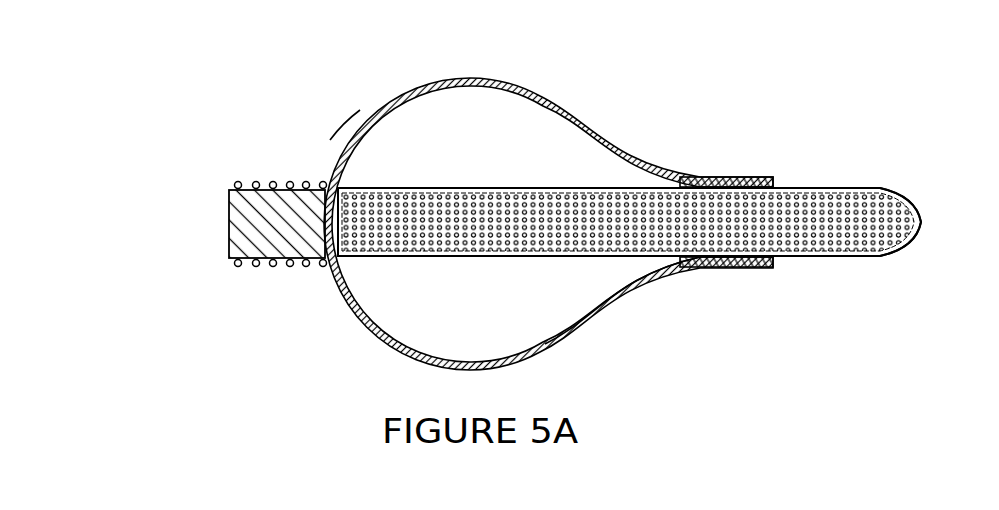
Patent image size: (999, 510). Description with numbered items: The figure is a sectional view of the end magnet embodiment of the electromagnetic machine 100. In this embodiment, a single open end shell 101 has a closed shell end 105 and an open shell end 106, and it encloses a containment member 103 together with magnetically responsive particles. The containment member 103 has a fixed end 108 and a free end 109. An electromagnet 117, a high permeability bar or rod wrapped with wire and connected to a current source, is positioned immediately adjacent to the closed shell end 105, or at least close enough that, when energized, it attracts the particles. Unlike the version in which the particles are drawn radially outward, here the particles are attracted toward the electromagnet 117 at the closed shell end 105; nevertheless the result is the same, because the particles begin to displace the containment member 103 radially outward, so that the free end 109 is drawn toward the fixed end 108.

The electromagnetic machine 100 is at (634, 96).
The single open end shell 101 is at (452, 82).
The containment member 103 is at (578, 258).
The closed shell end 105 is at (333, 148).
The open shell end 106 is at (697, 180).
The fixed end 108 is at (362, 260).
The free end 109 is at (915, 208).
The electromagnet 117 is at (229, 214).